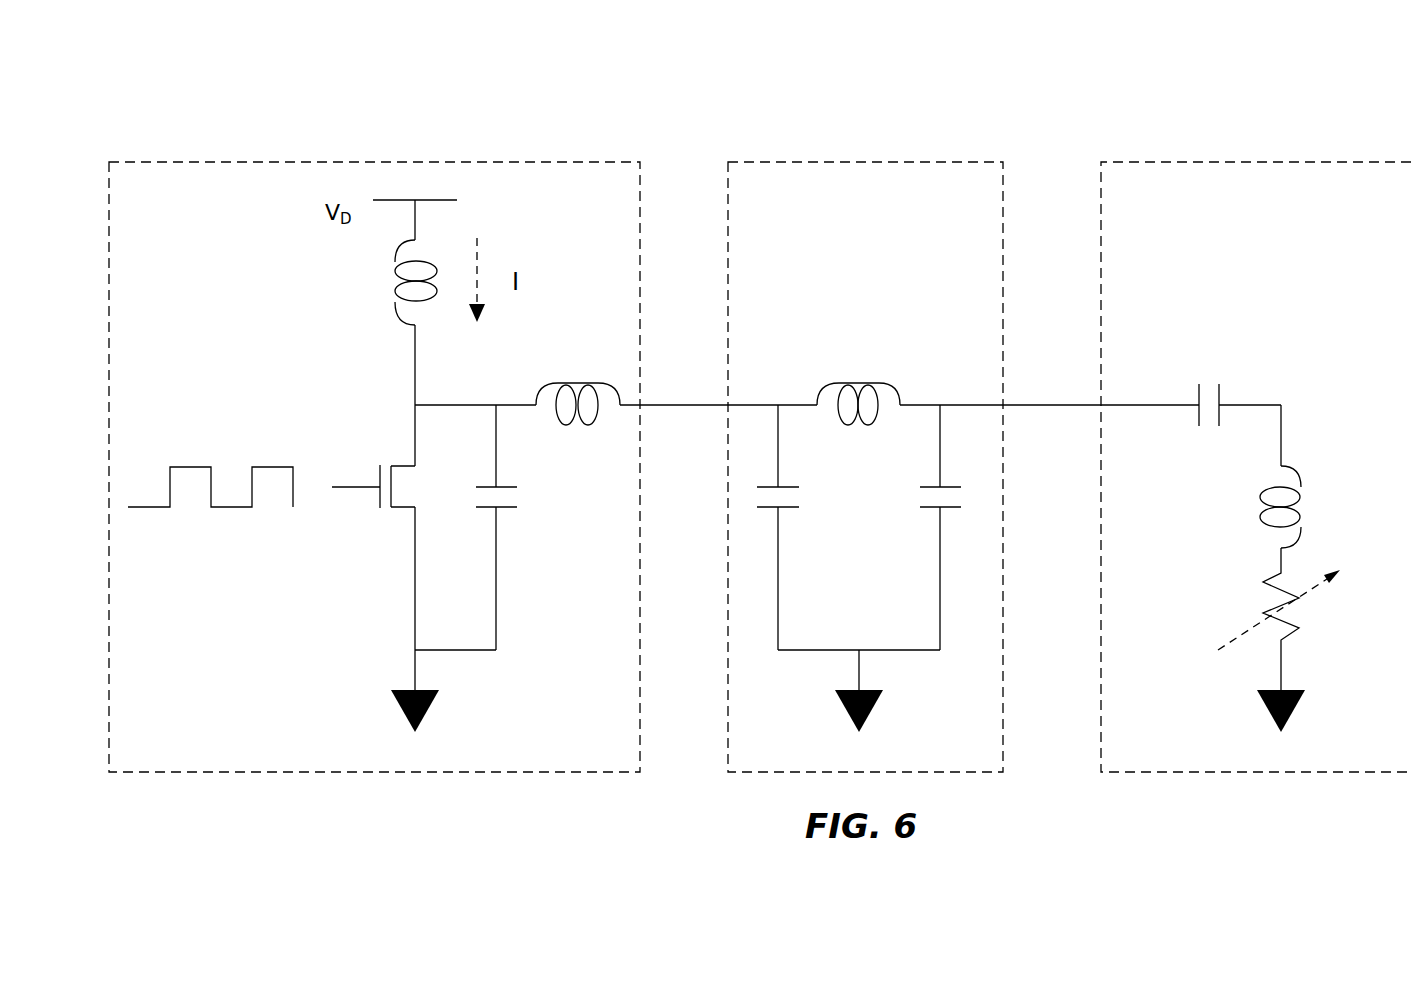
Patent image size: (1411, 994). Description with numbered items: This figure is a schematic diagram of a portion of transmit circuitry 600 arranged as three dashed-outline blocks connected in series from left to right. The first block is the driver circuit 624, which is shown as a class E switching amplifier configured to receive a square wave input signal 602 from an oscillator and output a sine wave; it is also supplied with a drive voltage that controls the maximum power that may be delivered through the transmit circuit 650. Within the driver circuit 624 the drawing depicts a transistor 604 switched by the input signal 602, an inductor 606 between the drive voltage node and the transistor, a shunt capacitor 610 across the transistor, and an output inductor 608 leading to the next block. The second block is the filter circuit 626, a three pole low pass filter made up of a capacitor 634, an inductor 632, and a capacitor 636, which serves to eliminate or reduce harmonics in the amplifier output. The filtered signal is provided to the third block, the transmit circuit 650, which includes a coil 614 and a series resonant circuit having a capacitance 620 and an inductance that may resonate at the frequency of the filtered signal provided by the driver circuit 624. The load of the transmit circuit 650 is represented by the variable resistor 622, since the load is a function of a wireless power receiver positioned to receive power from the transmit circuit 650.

The transmit circuitry 600 is at (290, 110).
The input signal 602 is at (187, 464).
The transistor 604 is at (401, 463).
The inductor 606 is at (390, 278).
The inductor 608 is at (578, 383).
The capacitor 610 is at (506, 484).
The coil 614 is at (1293, 462).
The capacitance 620 is at (1219, 395).
The variable resistor 622 is at (1275, 574).
The driver circuit 624 is at (492, 162).
The filter circuit 626 is at (927, 162).
The inductor 632 is at (882, 383).
The capacitor 634 is at (787, 486).
The capacitor 636 is at (949, 486).
The transmit circuit 650 is at (1333, 162).